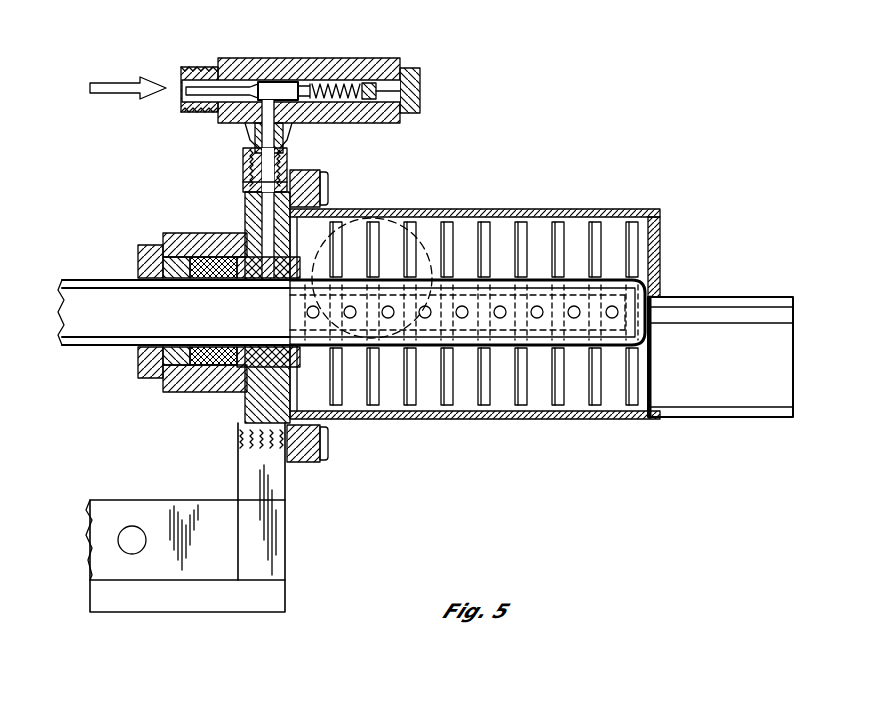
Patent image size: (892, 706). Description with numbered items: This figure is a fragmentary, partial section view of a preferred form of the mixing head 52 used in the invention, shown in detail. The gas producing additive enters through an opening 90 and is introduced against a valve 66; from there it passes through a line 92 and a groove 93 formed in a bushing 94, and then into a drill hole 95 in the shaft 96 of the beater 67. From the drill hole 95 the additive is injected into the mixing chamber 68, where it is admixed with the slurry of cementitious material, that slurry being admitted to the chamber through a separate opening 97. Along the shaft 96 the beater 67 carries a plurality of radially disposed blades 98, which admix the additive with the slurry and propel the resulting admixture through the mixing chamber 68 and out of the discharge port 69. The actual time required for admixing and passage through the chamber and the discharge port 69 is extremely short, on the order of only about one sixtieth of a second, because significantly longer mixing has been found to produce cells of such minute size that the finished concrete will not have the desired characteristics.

The mixing head 52 is at (488, 208).
The valve 66 is at (288, 82).
The beater 67 is at (605, 281).
The mixing chamber 68 is at (577, 228).
The discharge port 69 is at (768, 297).
The opening 90 is at (207, 67).
The line 92 is at (243, 158).
The groove 93 is at (286, 262).
The bushing 94 is at (240, 235).
The drill hole 95 is at (298, 360).
The shaft 96 is at (174, 312).
The opening 97 is at (423, 215).
The blades 98 is at (630, 230).